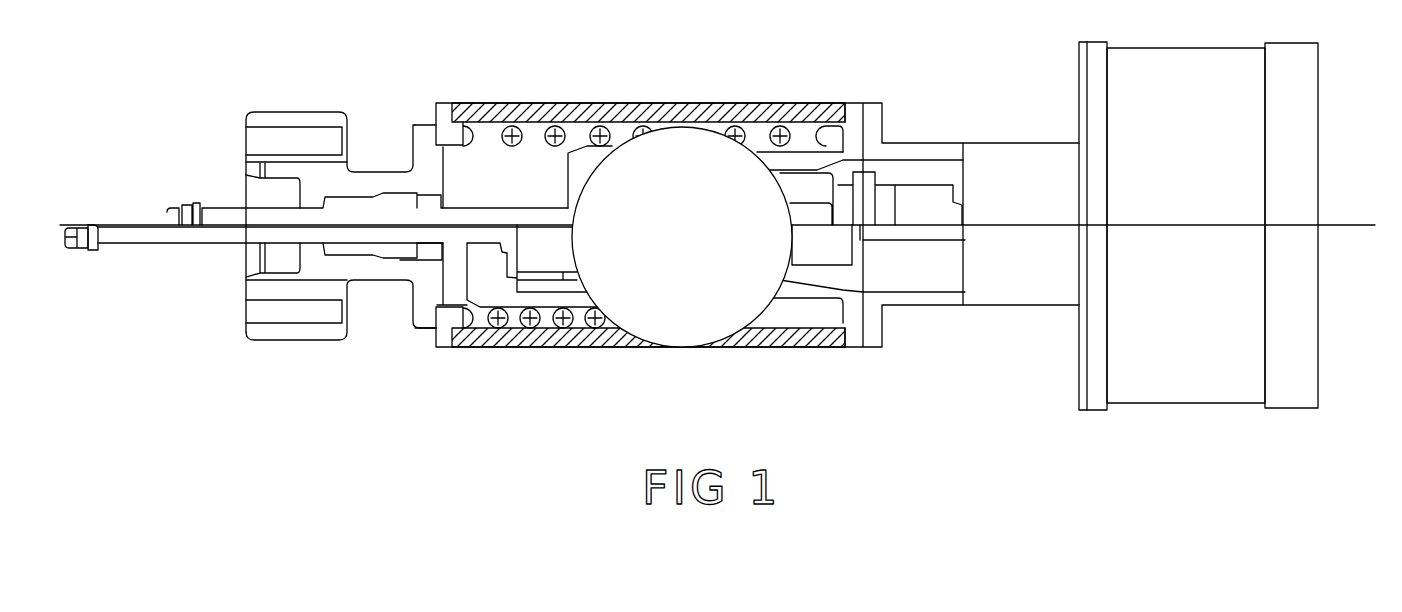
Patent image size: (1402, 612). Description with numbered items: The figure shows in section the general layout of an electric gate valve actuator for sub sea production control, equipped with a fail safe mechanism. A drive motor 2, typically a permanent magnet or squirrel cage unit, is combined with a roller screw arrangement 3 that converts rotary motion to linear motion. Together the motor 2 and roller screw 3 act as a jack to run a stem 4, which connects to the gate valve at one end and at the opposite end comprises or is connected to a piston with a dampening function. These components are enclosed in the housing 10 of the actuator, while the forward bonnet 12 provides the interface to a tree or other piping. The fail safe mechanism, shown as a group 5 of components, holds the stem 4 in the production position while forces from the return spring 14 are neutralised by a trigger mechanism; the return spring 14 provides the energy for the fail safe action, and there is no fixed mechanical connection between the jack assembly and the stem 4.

The drive motor 2 is at (1177, 323).
The roller screw arrangement 3 is at (813, 215).
The stem 4 is at (399, 230).
The fail safe mechanism 5 is at (736, 331).
The housing 10 is at (483, 338).
The forward bonnet 12 is at (318, 272).
The return spring 14 is at (561, 327).